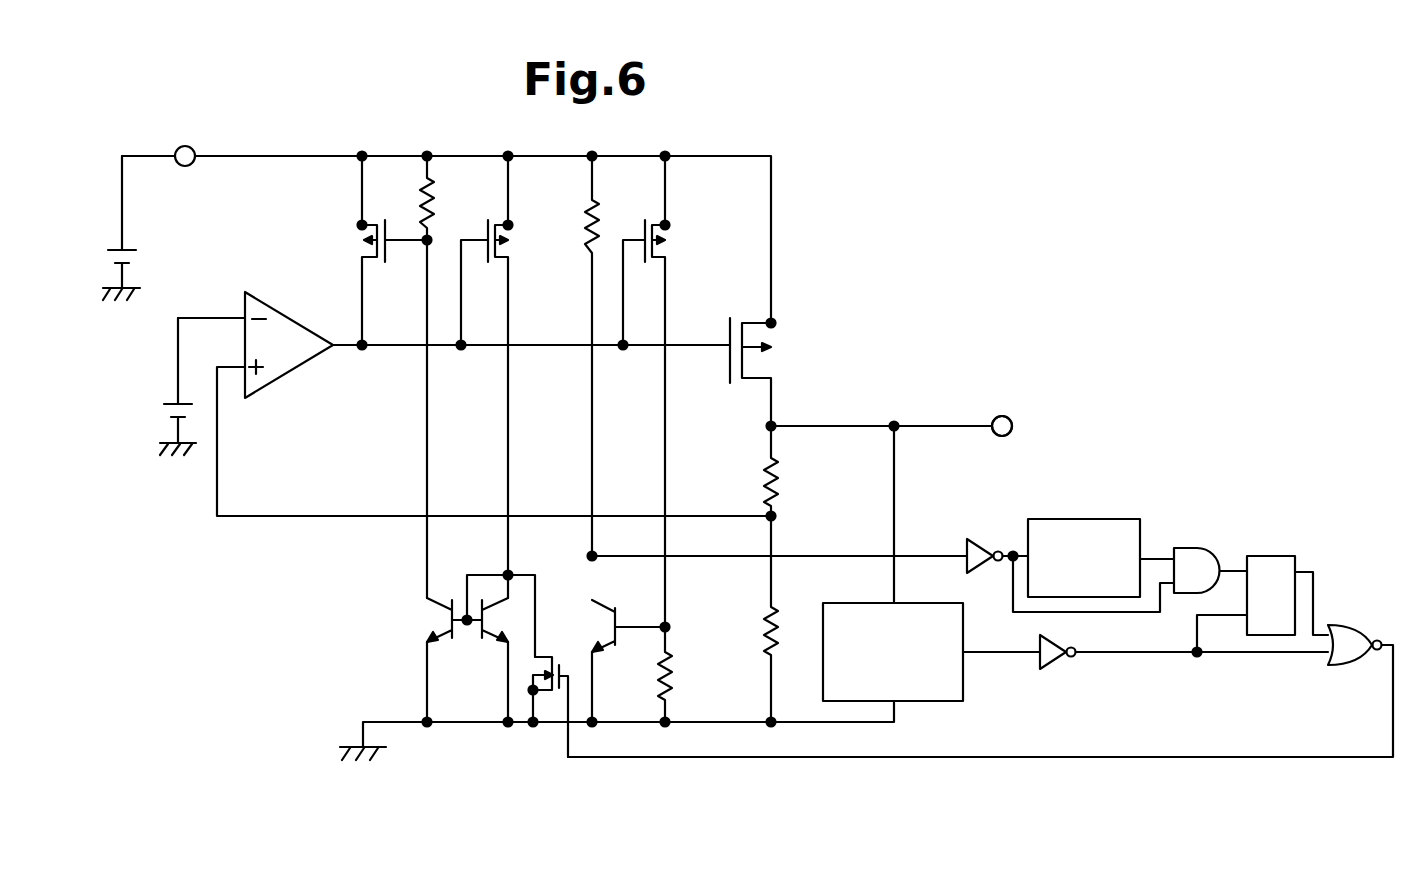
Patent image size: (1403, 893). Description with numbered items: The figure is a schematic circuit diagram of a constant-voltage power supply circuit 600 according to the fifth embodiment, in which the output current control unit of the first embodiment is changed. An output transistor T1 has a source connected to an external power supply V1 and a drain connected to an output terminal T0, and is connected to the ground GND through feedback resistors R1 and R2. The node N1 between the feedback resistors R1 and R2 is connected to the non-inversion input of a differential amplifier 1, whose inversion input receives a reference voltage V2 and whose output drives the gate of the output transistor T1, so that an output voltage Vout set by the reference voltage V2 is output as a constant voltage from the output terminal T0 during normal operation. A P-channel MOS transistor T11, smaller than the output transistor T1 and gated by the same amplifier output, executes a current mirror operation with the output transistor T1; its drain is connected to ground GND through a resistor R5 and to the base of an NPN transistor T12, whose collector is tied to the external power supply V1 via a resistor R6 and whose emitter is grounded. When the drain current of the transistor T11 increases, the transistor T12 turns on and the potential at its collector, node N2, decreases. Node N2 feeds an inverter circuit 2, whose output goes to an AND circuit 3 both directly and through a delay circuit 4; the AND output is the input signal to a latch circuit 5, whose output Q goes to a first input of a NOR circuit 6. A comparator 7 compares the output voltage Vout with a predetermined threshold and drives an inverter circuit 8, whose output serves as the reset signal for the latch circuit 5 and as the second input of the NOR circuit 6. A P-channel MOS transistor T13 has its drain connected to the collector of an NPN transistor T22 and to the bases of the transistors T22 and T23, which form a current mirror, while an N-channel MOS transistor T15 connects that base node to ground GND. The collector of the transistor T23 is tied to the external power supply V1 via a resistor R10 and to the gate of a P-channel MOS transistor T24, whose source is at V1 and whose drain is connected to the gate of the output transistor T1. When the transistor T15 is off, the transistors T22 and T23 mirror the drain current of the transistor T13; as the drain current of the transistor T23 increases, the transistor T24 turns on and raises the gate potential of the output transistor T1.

The constant-voltage power supply circuit 600 is at (1062, 167).
The differential amplifier 1 is at (282, 318).
The inverter circuit 2 is at (978, 540).
The AND circuit 3 is at (1185, 546).
The delay circuit 4 is at (1086, 519).
The latch circuit 5 is at (1266, 556).
The NOR circuit 6 is at (1343, 625).
The comparator 7 is at (965, 690).
The inverter circuit 8 is at (1056, 660).
The output transistor T1 is at (768, 373).
The P-channel MOS transistor T11 is at (656, 263).
The NPN transistor T12 is at (633, 583).
The P-channel MOS transistor T13 is at (500, 257).
The N-channel MOS transistor T15 is at (535, 652).
The NPN transistor T22 is at (494, 636).
The NPN transistor T23 is at (437, 602).
The P-channel MOS transistor T24 is at (360, 219).
The feedback resistor R1 is at (778, 468).
The feedback resistor R2 is at (777, 613).
The resistor R5 is at (672, 660).
The resistor R6 is at (600, 206).
The resistor R10 is at (438, 210).
The node N1 is at (793, 518).
The node N2 is at (757, 552).
The external power supply V1 is at (107, 250).
The reference voltage V2 is at (163, 404).
The output voltage Vout is at (922, 429).
The output terminal T0 is at (1008, 435).
The ground GND is at (588, 730).